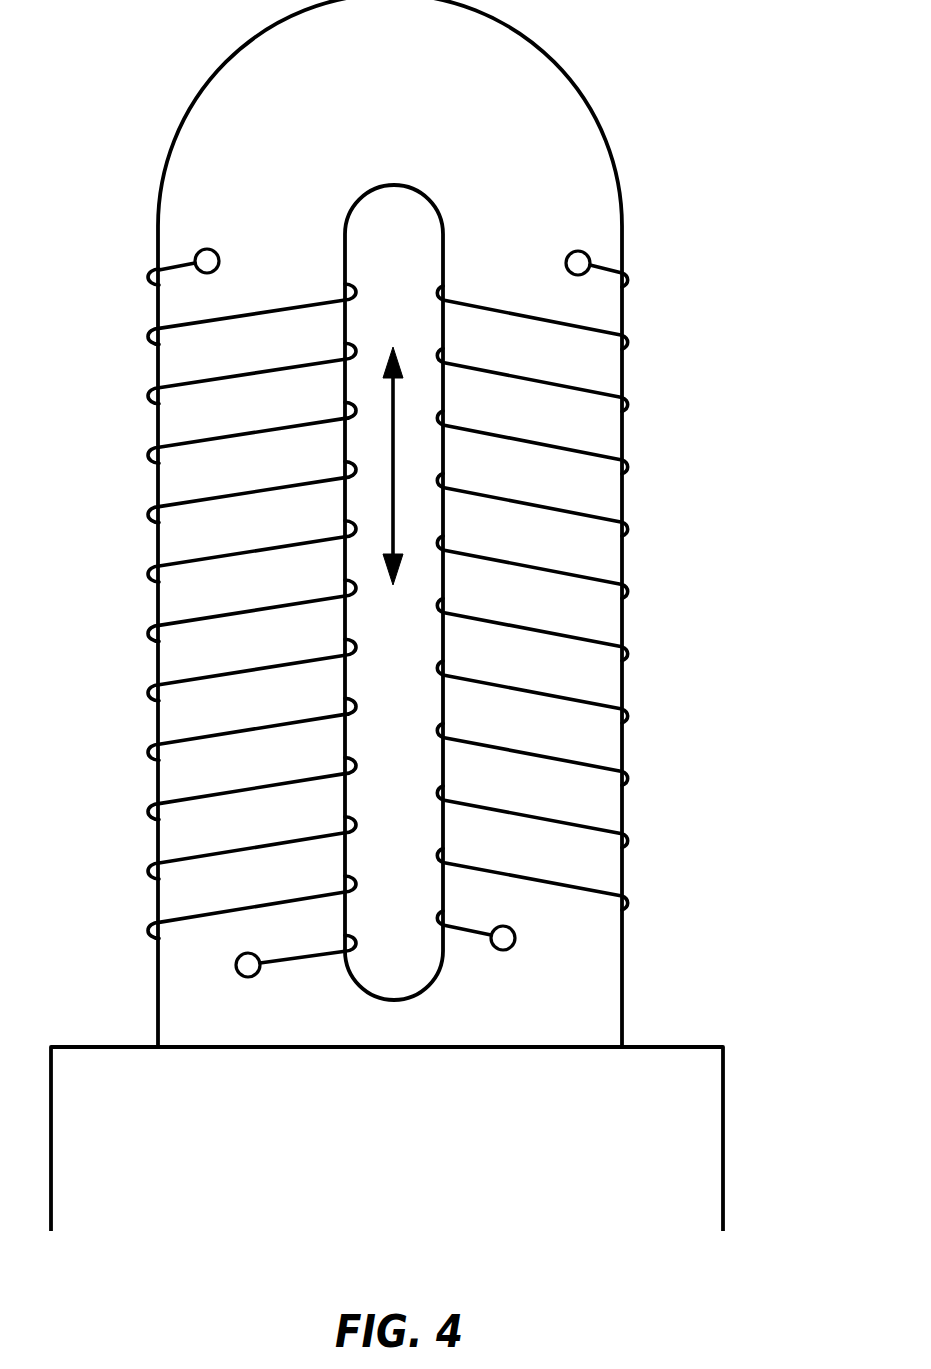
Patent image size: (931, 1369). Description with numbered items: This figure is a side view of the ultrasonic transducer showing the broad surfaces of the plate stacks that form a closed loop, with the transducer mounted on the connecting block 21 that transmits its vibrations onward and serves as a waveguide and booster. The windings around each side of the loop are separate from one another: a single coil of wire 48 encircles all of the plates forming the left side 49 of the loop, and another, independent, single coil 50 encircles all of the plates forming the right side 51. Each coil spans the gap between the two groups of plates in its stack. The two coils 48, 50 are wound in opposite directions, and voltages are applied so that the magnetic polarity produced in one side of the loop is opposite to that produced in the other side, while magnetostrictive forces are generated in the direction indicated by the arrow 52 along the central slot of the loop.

The connecting block 21 is at (723, 1100).
The coil of wire 48 is at (200, 382).
The left side 49 is at (157, 215).
The single coil 50 is at (578, 388).
The right side 51 is at (623, 212).
The arrow 52 is at (393, 525).